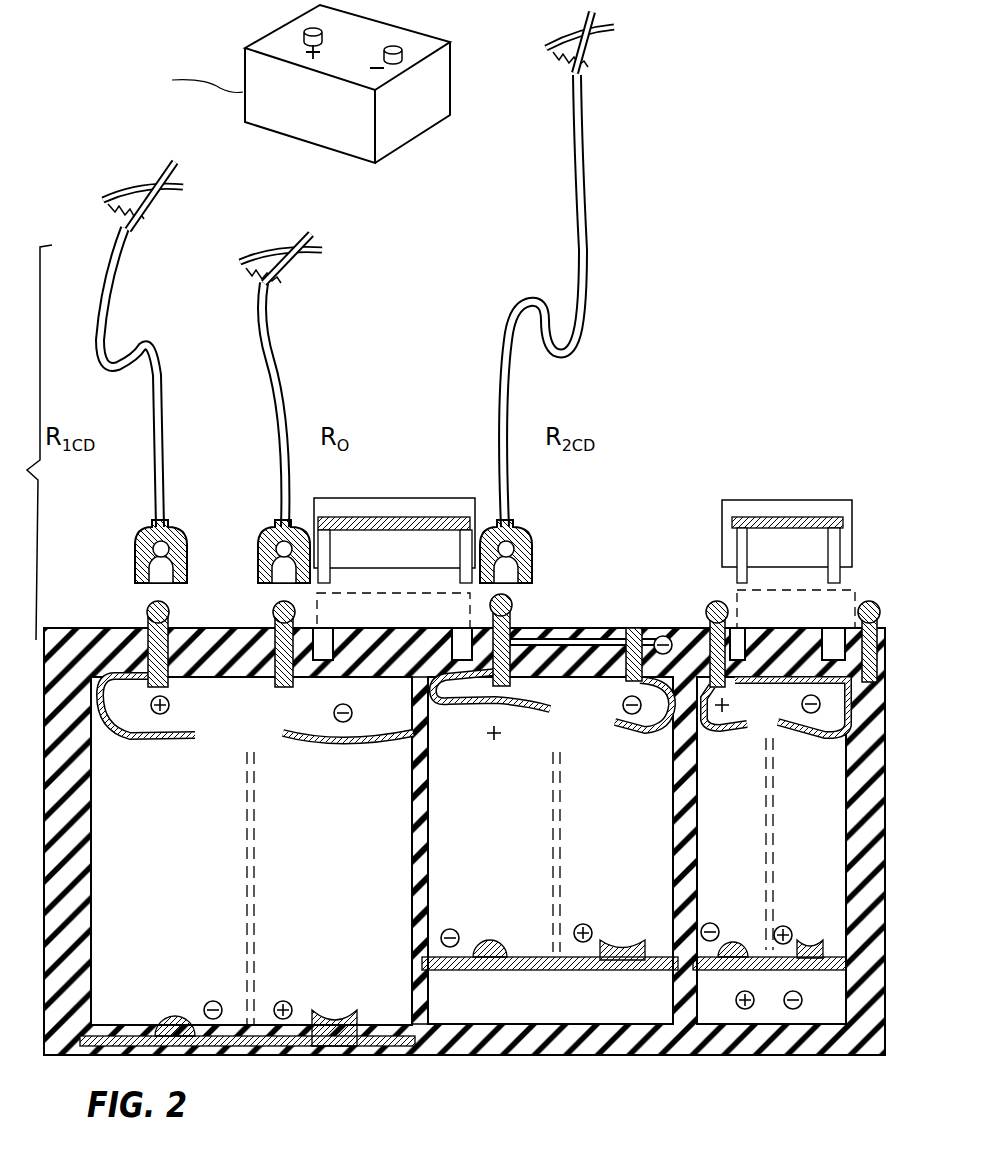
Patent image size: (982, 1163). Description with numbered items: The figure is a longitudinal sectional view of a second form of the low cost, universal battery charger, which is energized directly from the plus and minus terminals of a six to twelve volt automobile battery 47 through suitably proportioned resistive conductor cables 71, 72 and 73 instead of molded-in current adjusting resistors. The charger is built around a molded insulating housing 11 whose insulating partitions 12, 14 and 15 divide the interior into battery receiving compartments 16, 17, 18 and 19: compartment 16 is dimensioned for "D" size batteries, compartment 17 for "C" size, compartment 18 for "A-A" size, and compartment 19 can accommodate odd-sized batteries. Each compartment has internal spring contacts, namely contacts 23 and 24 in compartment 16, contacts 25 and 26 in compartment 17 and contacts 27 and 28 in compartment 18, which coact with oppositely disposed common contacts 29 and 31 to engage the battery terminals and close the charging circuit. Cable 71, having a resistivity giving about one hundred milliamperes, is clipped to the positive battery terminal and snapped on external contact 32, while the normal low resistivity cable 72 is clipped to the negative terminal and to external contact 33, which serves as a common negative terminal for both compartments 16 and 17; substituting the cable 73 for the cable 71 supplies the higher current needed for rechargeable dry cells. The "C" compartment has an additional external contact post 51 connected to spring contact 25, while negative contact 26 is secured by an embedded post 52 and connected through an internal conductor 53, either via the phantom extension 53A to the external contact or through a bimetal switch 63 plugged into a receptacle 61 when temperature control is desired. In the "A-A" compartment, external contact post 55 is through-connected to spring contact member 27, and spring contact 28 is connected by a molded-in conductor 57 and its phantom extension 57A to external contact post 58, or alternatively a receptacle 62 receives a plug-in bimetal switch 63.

The housing 11 is at (340, 1048).
The insulating partition 12 is at (410, 884).
The insulating partition 14 is at (536, 972).
The insulating partition 15 is at (820, 972).
The "D" battery receiving compartment 16 is at (326, 865).
The "C" battery receiving compartment 17 is at (612, 866).
The "A-A" battery receiving compartment 18 is at (813, 856).
The battery receiving compartment 19 is at (720, 1050).
The spring contact 23 is at (142, 740).
The spring contact 24 is at (355, 748).
The spring contact 25 is at (466, 718).
The spring contact 26 is at (638, 740).
The spring contact member 27 is at (715, 738).
The spring contact member 28 is at (808, 738).
The common contact 29 is at (168, 1018).
The common contact 31 is at (345, 1015).
The external contact post 32 is at (148, 606).
The external contact post 33 is at (273, 608).
The 6-12 volt automobile battery 47 is at (422, 118).
The external contact post 51 is at (512, 607).
The post 52 is at (635, 628).
The internal conductor 53 is at (562, 640).
The extension of internal conductor 53A is at (350, 612).
The external contact post 55 is at (707, 612).
The molded-in conductor 57 is at (856, 640).
The extension of conductor 57A is at (738, 590).
The external contact post 58 is at (876, 602).
The receptacle 61 is at (460, 627).
The receptacle 62 is at (832, 625).
The bimetal switch 63 is at (440, 500).
The resistive conductor cable 71 is at (110, 293).
The conductor cable 72 is at (290, 355).
The resistive conductor cable 73 is at (588, 205).